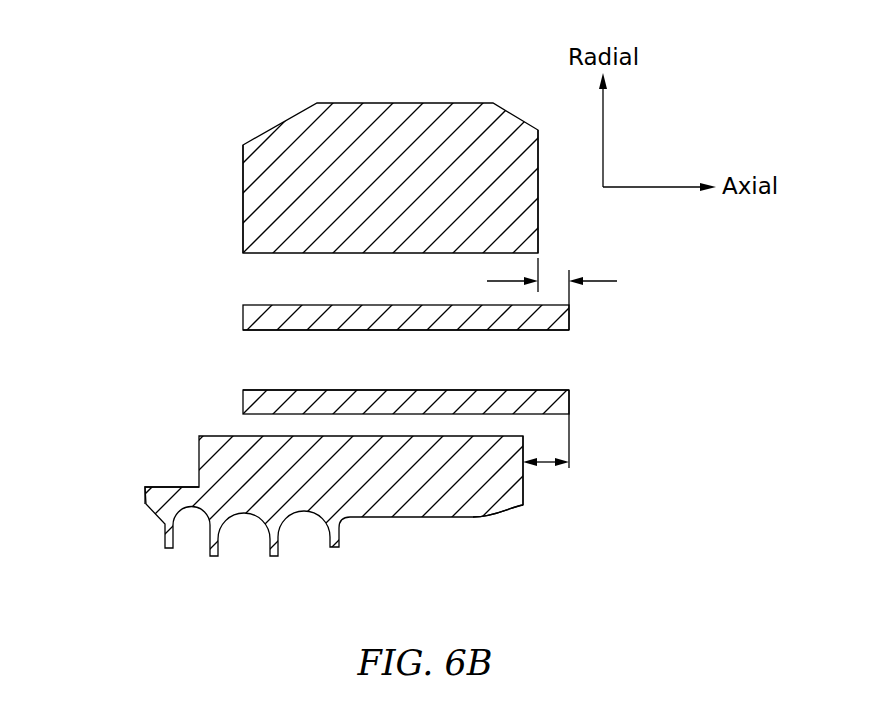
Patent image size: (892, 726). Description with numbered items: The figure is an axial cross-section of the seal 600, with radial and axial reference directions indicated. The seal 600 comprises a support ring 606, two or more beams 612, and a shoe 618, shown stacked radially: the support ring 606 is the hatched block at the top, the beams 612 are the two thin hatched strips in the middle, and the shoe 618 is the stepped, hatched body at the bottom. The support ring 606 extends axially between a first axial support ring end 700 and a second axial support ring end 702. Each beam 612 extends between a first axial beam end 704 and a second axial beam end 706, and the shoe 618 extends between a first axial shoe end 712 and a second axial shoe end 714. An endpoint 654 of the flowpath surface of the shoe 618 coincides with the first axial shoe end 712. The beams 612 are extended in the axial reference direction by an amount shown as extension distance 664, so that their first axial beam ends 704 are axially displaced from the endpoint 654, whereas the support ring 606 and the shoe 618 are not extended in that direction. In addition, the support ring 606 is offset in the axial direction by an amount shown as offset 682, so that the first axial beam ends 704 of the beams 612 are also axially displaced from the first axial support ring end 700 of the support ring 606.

The seal 600 is at (156, 126).
The support ring 606 is at (436, 103).
The beams 612 is at (243, 396).
The shoe 618 is at (452, 478).
The endpoint of flowpath surface 654 is at (523, 505).
The extension distance 664 is at (547, 462).
The offset 682 is at (600, 281).
The first axial support ring end 700 is at (538, 176).
The second axial support ring end 702 is at (243, 207).
The first axial beam end 704 is at (570, 320).
The second axial beam end 706 is at (240, 310).
The first axial shoe end 712 is at (524, 488).
The second axial shoe end 714 is at (145, 496).